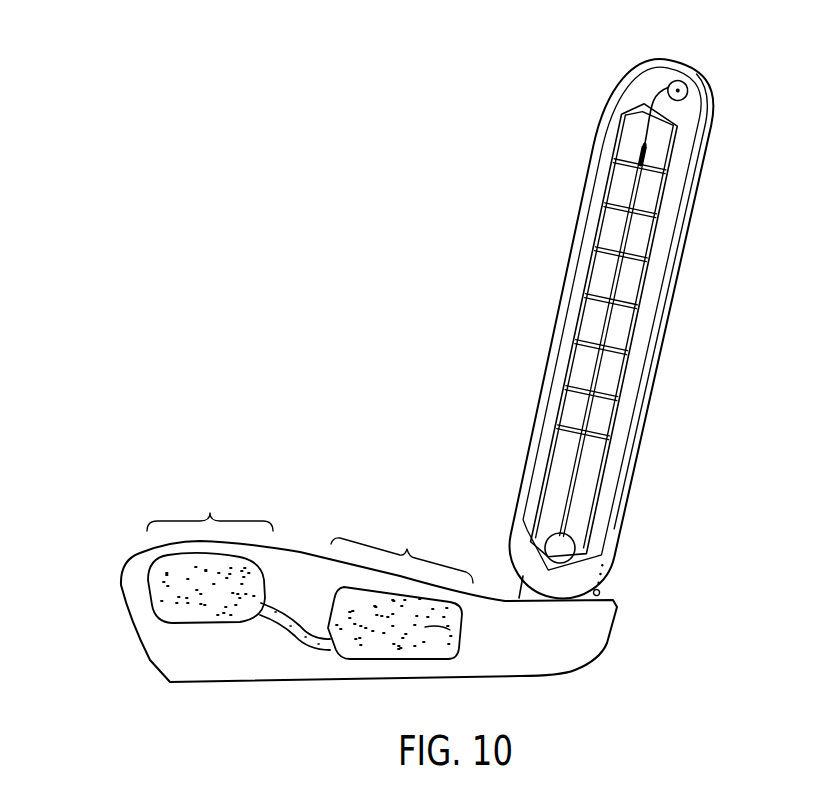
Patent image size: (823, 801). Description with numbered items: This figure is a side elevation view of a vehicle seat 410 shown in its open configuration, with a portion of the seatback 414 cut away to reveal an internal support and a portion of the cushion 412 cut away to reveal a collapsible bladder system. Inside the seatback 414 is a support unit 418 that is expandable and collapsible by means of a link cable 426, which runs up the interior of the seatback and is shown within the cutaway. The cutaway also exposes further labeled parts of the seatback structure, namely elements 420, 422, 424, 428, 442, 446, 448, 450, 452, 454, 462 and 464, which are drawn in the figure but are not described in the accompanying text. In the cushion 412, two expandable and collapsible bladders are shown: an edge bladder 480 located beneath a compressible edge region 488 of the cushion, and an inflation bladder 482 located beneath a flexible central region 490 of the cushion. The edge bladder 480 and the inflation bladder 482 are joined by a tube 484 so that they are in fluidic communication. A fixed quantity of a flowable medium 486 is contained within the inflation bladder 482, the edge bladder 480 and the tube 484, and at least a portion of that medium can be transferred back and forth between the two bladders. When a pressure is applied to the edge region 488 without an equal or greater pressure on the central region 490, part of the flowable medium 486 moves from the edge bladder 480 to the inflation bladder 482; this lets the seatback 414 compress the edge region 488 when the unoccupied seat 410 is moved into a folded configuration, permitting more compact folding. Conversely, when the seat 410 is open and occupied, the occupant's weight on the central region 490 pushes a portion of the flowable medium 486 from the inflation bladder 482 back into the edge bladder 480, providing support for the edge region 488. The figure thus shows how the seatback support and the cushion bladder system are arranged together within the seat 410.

The seat 410 is at (343, 260).
The cushion 412 is at (102, 614).
The seatback 414 is at (556, 126).
The support unit 418 is at (604, 332).
The inner frame 420 is at (649, 116).
The cross member 422 is at (630, 210).
The cross member 424 is at (597, 367).
The link cable 426 is at (614, 312).
The side rail 428 is at (657, 302).
The pivot 442 is at (560, 548).
The hinge bracket 446 is at (520, 587).
The back shell 448 is at (611, 319).
The back cover 450 is at (611, 328).
The fastener 452 is at (599, 581).
The upper pulley 454 is at (678, 91).
The right rail 462 is at (629, 336).
The left rail 464 is at (581, 326).
The edge bladder 480 is at (197, 625).
The inflation bladder 482 is at (373, 660).
The tube 484 is at (293, 634).
The flowable medium 486 is at (425, 627).
The compressible edge region 488 is at (210, 508).
The flexible central region 490 is at (402, 553).